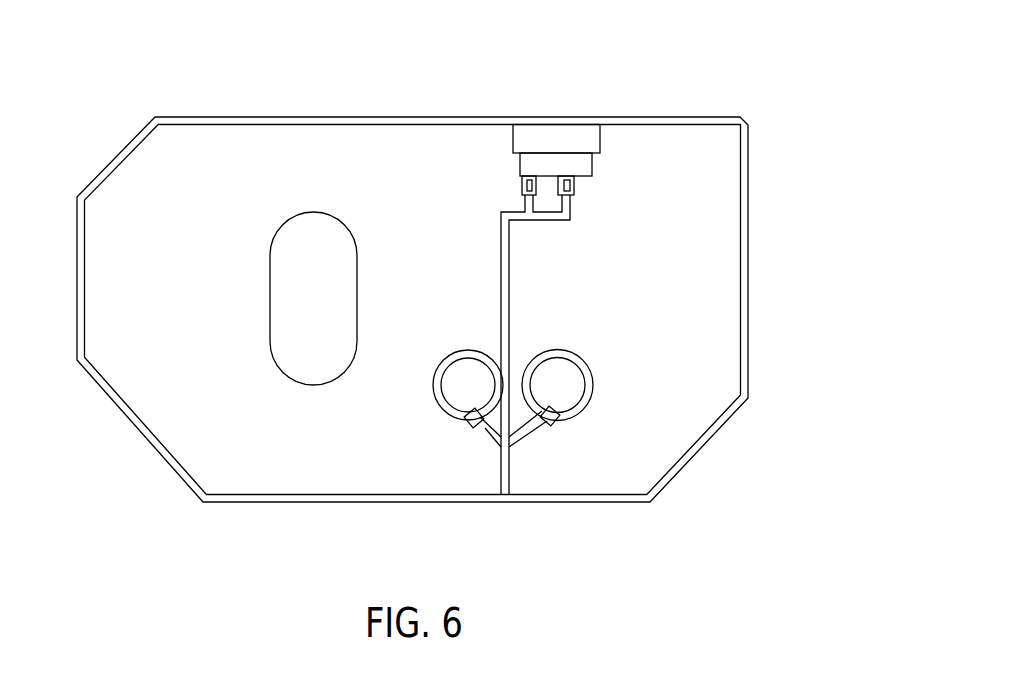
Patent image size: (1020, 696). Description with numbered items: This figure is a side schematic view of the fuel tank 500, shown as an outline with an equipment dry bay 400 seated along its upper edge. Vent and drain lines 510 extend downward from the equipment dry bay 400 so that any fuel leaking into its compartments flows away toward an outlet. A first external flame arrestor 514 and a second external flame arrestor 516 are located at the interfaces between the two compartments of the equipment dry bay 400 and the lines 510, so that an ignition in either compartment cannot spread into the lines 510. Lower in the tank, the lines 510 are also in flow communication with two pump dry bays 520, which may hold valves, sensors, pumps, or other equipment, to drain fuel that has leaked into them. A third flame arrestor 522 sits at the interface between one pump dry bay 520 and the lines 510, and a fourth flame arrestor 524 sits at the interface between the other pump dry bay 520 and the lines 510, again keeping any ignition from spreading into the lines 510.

The fuel tank 500 is at (598, 46).
The equipment dry bay 400 is at (540, 142).
The first external flame arrestor 514 is at (522, 185).
The second external flame arrestor 516 is at (574, 186).
The vent and drain lines 510 is at (510, 258).
The pump dry bays 520 is at (477, 372).
The third flame arrestor 522 is at (471, 433).
The fourth flame arrestor 524 is at (553, 433).